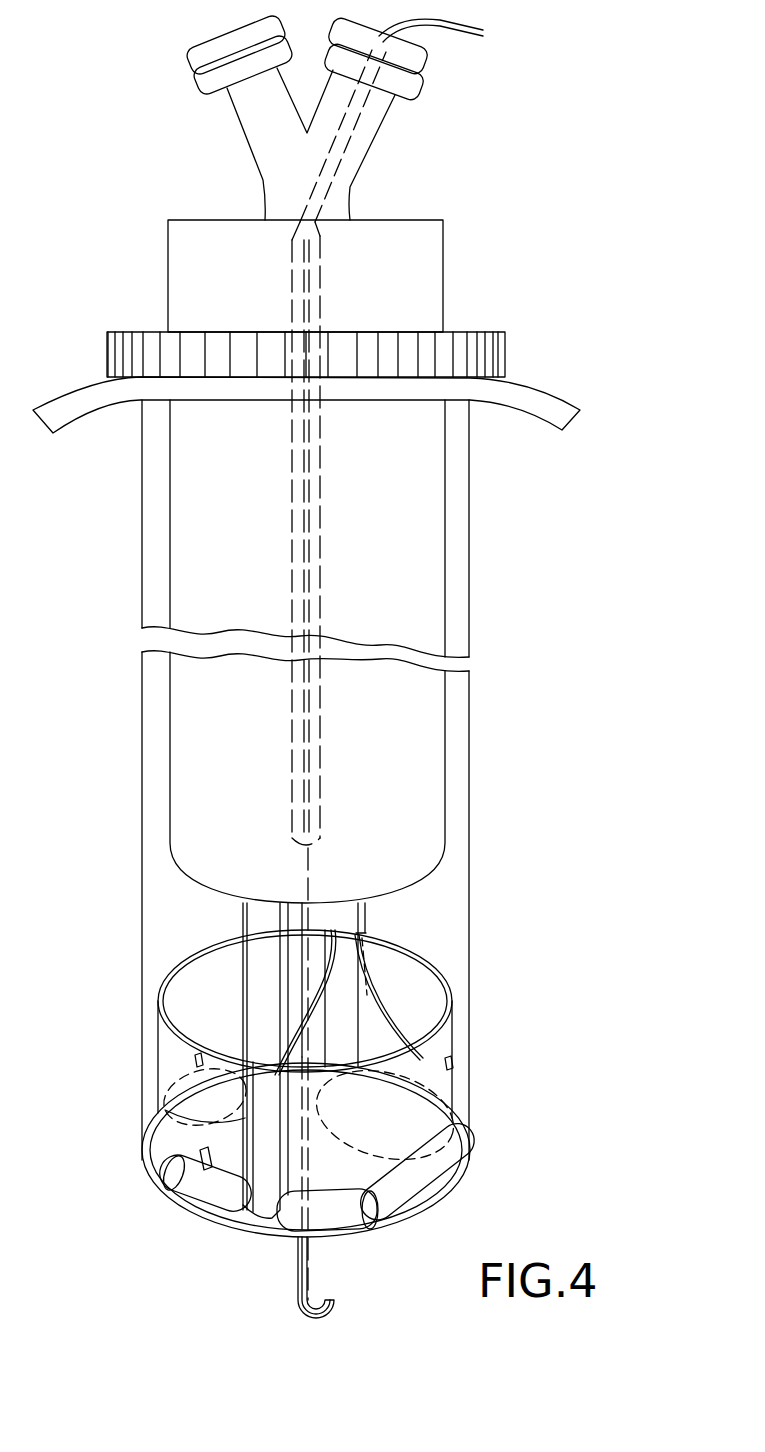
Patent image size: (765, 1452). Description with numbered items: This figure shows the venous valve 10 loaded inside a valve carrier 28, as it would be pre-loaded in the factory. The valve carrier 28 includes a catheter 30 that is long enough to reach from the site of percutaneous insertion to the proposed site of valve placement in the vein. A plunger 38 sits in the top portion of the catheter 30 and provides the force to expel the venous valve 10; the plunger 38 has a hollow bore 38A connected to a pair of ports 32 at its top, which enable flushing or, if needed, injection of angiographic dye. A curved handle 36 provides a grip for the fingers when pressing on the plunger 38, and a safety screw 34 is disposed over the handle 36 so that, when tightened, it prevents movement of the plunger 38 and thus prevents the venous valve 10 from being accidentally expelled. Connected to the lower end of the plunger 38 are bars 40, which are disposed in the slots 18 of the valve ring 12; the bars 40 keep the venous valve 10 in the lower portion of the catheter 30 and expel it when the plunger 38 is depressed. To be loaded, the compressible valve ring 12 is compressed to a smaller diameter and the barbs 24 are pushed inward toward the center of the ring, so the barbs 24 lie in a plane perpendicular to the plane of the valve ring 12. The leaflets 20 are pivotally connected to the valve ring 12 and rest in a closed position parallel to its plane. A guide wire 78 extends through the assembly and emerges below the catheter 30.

The venous valve 10 is at (464, 1200).
The valve ring 12 is at (450, 1170).
The slots 18 is at (256, 1215).
The leaflets 20 is at (157, 1042).
The barbs 24 is at (197, 1060).
The valve carrier 28 is at (483, 243).
The catheter 30 is at (470, 567).
The ports 32 is at (214, 90).
The safety screw 34 is at (505, 350).
The curved handle 36 is at (563, 400).
The plunger 38 is at (443, 302).
The hollow bore 38A is at (322, 287).
The bars 40 is at (250, 915).
The guide wire 78 is at (307, 1278).